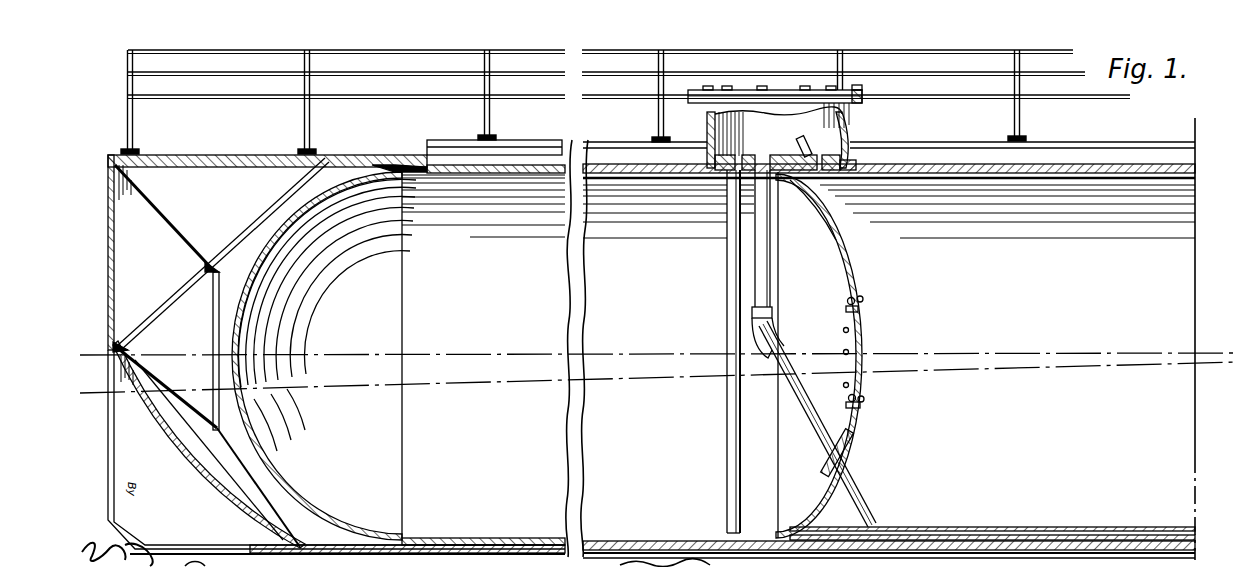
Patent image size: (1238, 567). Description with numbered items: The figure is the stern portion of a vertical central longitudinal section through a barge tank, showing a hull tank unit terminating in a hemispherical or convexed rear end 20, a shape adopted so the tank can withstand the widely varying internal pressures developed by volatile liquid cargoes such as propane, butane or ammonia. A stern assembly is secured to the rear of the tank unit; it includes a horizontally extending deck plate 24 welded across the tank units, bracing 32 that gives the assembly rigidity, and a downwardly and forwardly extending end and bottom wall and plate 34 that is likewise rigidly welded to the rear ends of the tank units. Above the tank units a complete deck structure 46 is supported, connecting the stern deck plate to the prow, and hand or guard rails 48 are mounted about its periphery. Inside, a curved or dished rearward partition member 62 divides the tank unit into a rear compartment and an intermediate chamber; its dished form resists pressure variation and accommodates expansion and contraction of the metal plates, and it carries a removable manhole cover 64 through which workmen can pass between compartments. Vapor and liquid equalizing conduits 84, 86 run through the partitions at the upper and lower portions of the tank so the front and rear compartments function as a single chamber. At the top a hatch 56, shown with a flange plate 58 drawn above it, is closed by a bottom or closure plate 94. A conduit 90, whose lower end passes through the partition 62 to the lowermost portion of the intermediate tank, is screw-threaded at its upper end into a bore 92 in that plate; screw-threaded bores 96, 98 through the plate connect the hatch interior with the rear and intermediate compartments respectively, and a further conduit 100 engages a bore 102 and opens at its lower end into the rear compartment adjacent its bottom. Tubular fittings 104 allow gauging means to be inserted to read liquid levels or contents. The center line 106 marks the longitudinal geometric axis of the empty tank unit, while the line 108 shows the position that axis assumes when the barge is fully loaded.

The rear end 20 is at (262, 250).
The deck plate 24 is at (208, 170).
The bracing 32 is at (187, 293).
The end and bottom wall and plate 34 is at (178, 477).
The deck structure 46 is at (1070, 146).
The guard rails 48 is at (940, 76).
The hatch 56 is at (853, 159).
The flange plate 58 is at (777, 94).
The rearward partition member 62 is at (846, 273).
The removable manhole cover 64 is at (864, 398).
The vapor equalizing conduit 84 is at (1055, 181).
The liquid equalizing conduit 86 is at (968, 527).
The conduit 90 is at (763, 283).
The bore 92 is at (762, 162).
The closure plate 94 is at (797, 156).
The screw-threaded bore 96 is at (722, 132).
The screw-threaded bore 98 is at (819, 213).
The conduit 100 is at (732, 249).
The bore 102 is at (717, 163).
The tubular fittings 104 is at (847, 138).
The center line 106 is at (519, 355).
The loaded axis line 108 is at (512, 392).